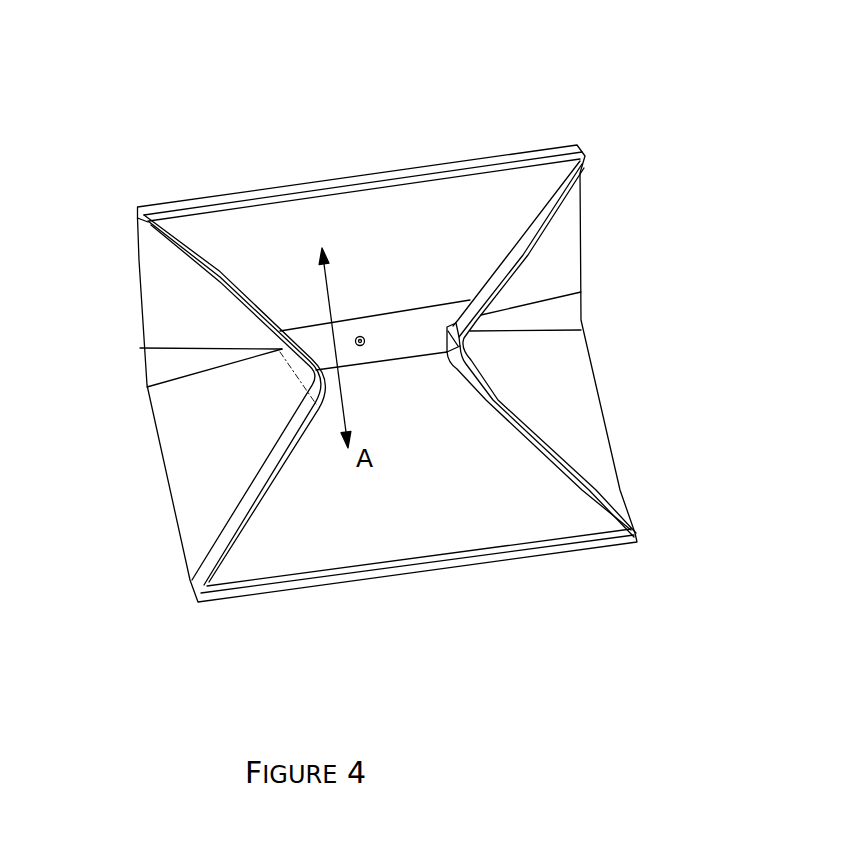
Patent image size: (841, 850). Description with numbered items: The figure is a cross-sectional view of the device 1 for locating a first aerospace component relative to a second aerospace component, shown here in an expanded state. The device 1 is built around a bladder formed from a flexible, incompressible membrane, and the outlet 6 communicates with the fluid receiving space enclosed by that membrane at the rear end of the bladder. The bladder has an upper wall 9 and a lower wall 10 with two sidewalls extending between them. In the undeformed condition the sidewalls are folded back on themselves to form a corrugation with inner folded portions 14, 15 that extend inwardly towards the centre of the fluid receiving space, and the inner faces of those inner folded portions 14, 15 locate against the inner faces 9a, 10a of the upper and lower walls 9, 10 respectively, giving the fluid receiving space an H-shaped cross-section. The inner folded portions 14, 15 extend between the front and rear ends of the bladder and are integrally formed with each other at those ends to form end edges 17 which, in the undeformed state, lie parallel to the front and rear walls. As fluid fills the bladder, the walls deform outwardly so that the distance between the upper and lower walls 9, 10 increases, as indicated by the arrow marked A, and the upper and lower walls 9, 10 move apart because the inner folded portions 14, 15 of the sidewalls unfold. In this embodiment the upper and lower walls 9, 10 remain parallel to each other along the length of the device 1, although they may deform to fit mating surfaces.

The device 1 is at (560, 108).
The outlet 6 is at (362, 336).
The upper wall 9 is at (427, 181).
The inner face of the upper wall 9a is at (375, 213).
The lower wall 10 is at (467, 563).
The inner face of the lower wall 10a is at (360, 527).
The inner folded portion 14 is at (537, 237).
The inner folded portion 15 is at (552, 452).
The end edge 17 is at (160, 366).